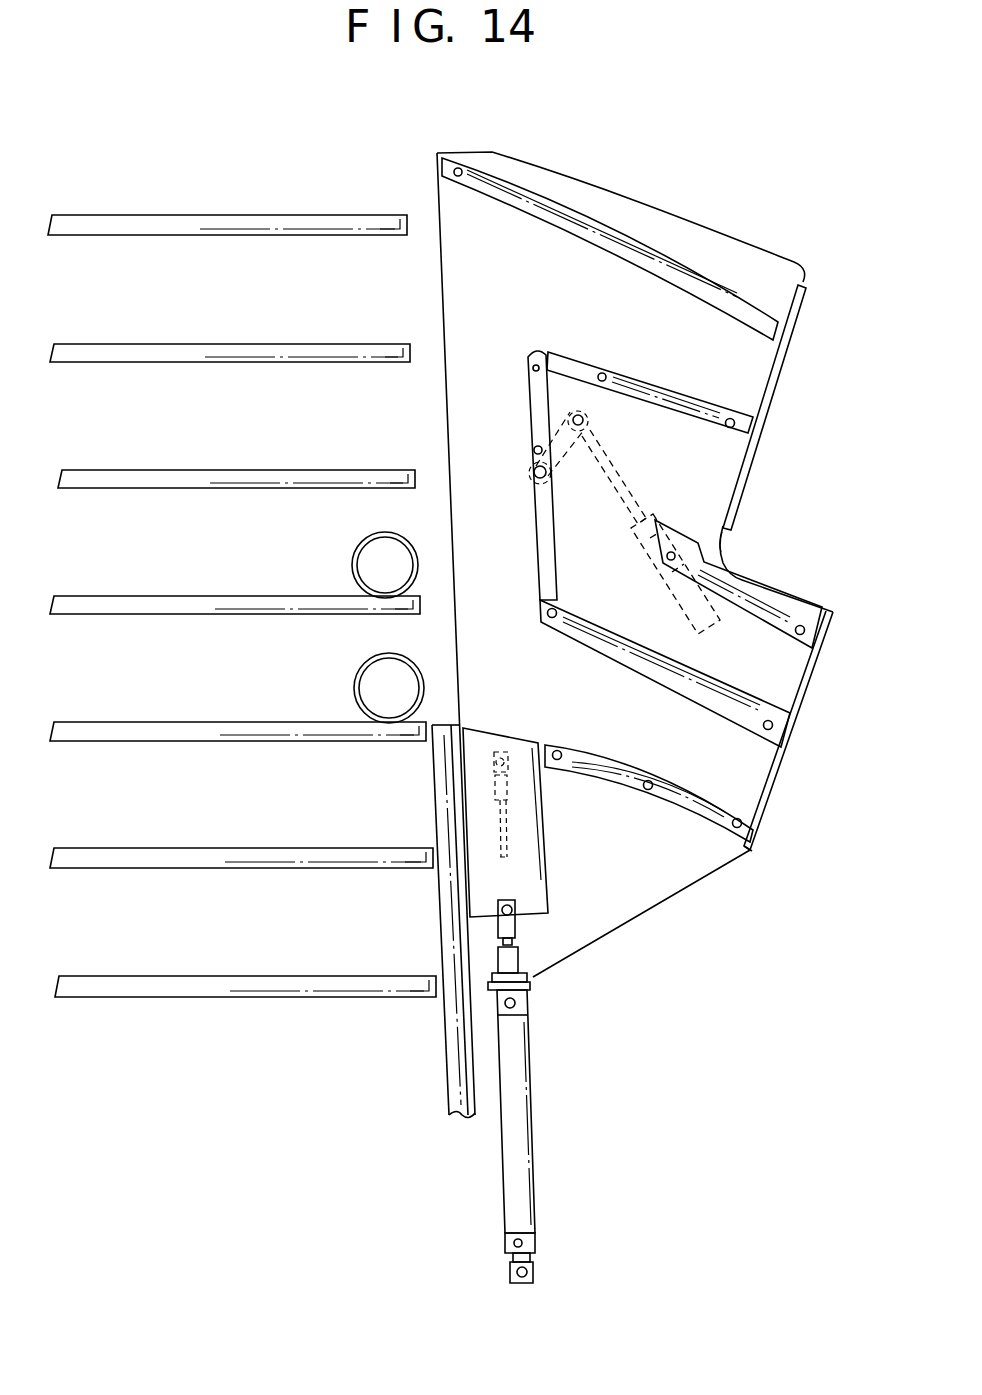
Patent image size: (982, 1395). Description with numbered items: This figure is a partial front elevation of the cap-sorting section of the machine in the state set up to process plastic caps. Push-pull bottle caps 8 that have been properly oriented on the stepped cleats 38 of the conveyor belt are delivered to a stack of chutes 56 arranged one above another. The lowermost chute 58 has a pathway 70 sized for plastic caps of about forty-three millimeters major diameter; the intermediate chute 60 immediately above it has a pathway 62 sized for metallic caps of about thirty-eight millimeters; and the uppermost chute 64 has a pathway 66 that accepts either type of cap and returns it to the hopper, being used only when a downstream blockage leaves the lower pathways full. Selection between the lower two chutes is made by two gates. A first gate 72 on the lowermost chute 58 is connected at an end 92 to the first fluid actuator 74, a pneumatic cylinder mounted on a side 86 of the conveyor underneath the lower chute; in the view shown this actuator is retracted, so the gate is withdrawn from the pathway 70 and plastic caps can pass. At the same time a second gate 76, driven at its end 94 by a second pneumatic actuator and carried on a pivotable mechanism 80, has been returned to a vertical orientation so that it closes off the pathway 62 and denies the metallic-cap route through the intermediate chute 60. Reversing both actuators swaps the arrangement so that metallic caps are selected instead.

The stepped cleat 38 is at (110, 216).
The push-pull bottle cap 8 is at (363, 667).
The pathway 66 is at (528, 283).
The uppermost chute 64 is at (777, 385).
The chutes 56 is at (729, 563).
The intermediate chute 60 is at (817, 672).
The pathway 62 is at (770, 680).
The lowermost chute 58 is at (773, 800).
The pathway 70 is at (690, 763).
The pivotable mechanism 80 is at (525, 463).
The end 94 is at (580, 413).
The second gate 76 is at (557, 527).
The first gate 72 is at (542, 885).
The end 92 is at (498, 940).
The first fluid actuator 74 is at (533, 1195).
The side 86 is at (458, 878).